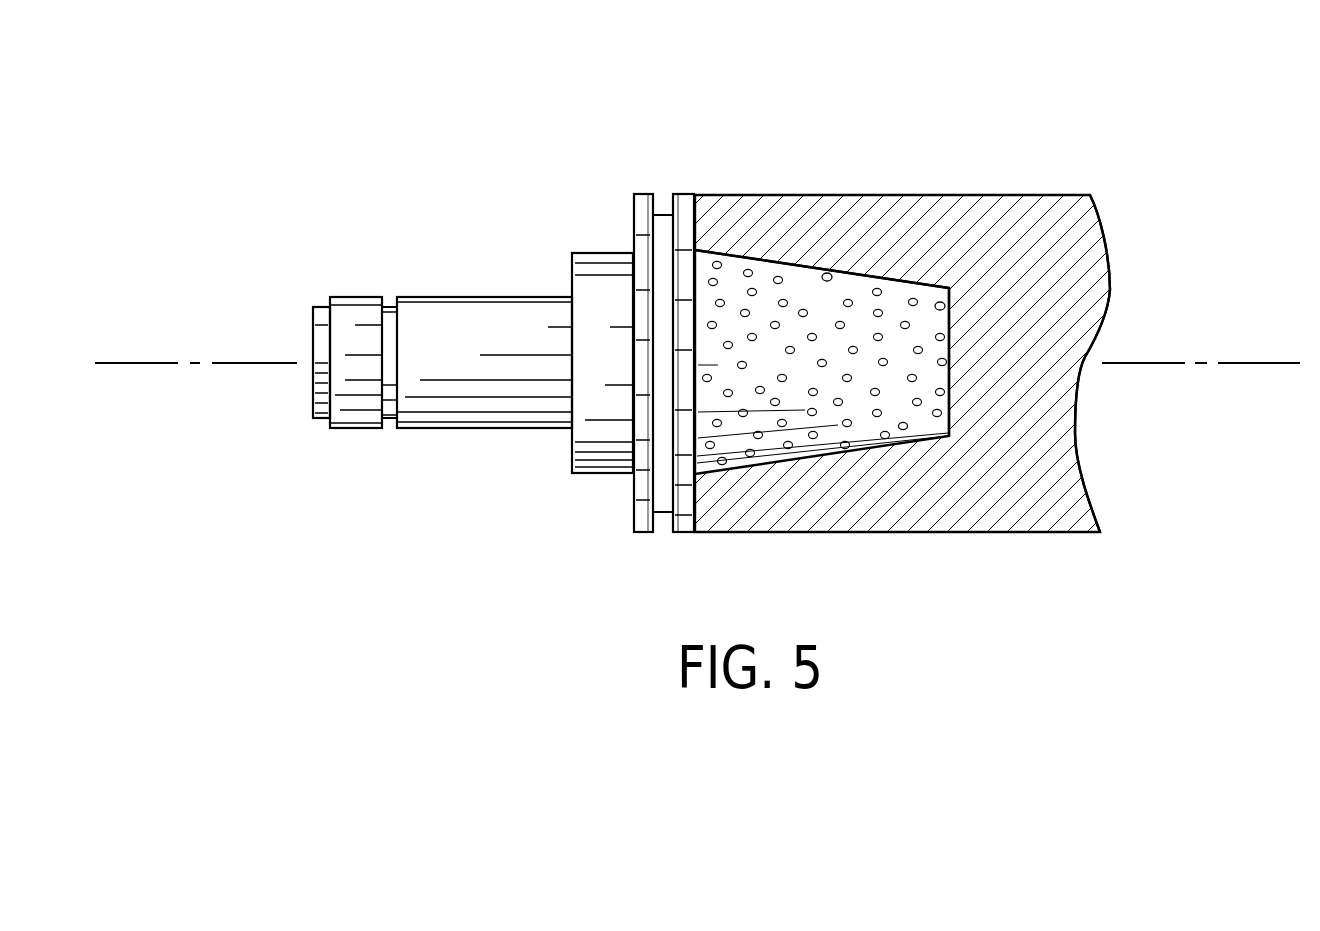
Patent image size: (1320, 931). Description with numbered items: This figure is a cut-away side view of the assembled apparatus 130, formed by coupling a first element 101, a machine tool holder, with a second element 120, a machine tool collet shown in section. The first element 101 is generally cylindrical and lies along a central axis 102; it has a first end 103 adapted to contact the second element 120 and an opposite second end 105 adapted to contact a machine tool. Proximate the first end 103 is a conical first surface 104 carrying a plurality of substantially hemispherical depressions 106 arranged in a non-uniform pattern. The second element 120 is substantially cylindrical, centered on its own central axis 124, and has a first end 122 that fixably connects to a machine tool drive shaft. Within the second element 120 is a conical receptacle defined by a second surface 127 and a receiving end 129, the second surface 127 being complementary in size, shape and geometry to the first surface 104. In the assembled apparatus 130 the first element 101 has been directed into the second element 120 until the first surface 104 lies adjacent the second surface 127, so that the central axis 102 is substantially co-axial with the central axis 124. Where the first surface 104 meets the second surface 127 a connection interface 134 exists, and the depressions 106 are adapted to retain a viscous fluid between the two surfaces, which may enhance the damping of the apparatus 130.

The first element 101 is at (427, 282).
The central axis 102 is at (140, 360).
The first end 103 is at (951, 301).
The first surface 104 is at (797, 267).
The second end 105 is at (312, 336).
The depressions 106 is at (722, 464).
The second element 120 is at (907, 177).
The first end 122 is at (1113, 277).
The central axis 124 is at (1250, 362).
The second surface 127 is at (808, 272).
The receiving end 129 is at (947, 327).
The apparatus 130 is at (673, 157).
The connection interface 134 is at (752, 255).